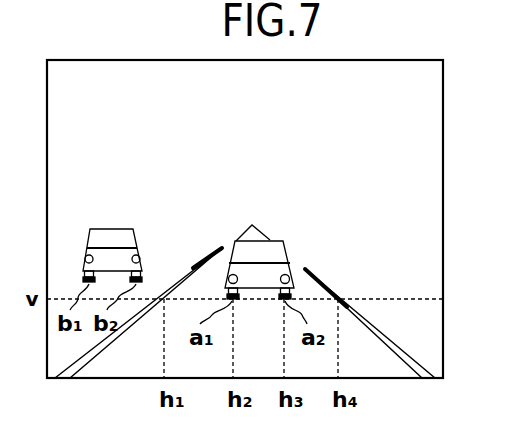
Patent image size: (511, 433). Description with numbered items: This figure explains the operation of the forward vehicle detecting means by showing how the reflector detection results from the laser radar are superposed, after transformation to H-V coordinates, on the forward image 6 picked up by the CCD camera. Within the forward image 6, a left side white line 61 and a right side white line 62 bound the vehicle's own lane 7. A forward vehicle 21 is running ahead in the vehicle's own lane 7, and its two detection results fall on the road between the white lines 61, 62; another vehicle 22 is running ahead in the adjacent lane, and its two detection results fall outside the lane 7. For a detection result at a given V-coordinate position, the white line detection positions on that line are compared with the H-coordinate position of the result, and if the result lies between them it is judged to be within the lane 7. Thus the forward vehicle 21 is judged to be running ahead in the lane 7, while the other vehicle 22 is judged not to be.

The forward image 6 is at (444, 182).
The vehicle's own lane 7 is at (122, 365).
The forward vehicle 21 is at (264, 236).
The other vehicle 22 is at (112, 228).
The left side white line 61 is at (192, 268).
The right side white line 62 is at (332, 288).